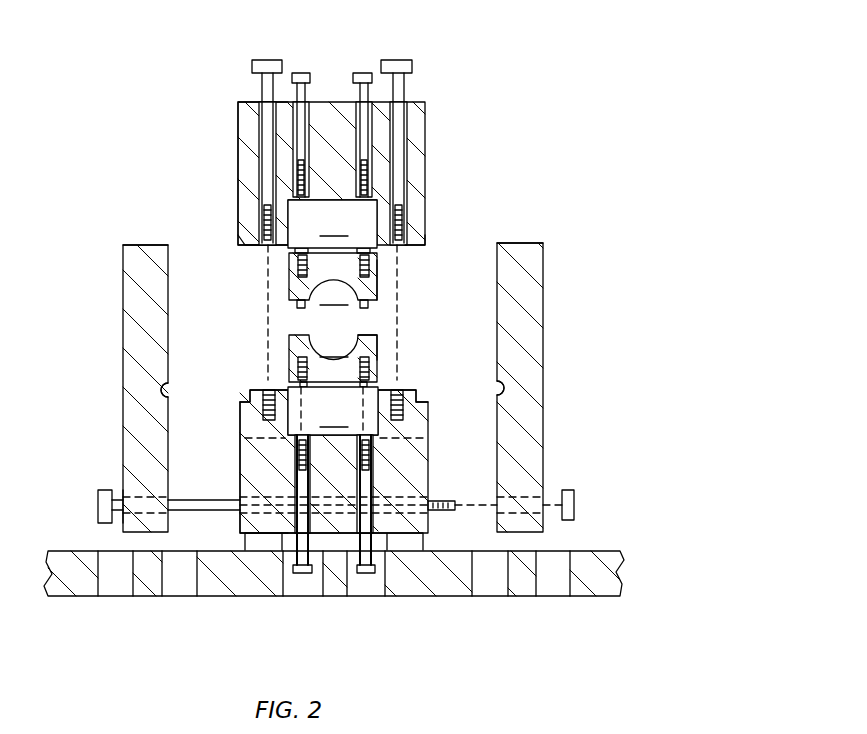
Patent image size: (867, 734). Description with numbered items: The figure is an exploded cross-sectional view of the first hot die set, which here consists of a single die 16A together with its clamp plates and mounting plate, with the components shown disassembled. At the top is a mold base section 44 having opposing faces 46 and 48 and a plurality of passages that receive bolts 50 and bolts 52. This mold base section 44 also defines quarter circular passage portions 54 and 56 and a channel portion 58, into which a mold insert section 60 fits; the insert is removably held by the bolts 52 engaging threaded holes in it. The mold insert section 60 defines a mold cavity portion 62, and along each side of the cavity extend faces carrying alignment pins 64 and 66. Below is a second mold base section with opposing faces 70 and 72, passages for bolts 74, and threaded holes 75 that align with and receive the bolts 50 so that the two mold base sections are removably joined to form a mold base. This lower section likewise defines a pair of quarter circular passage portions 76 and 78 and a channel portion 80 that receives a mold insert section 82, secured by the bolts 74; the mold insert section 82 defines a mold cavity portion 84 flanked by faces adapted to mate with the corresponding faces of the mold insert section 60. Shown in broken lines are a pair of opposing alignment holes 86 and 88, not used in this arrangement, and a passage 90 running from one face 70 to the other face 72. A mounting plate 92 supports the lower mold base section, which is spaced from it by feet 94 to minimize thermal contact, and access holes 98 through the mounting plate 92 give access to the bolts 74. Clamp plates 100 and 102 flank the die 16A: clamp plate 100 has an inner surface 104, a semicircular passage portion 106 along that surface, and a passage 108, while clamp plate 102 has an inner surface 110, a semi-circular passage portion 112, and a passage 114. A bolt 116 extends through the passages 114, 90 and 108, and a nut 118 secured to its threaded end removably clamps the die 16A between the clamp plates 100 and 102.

The die 16A is at (465, 98).
The mold base section 44 is at (418, 145).
The opposing face 46 is at (425, 185).
The opposing face 48 is at (238, 165).
The bolts 50 is at (270, 60).
The bolts 52 is at (302, 73).
The quarter circular passage portion 54 is at (415, 243).
The quarter circular passage portion 56 is at (245, 245).
The channel portion 58 is at (332, 224).
The mold insert section 60 is at (377, 284).
The mold cavity portion 62 is at (333, 279).
The alignment pin 64 is at (370, 306).
The alignment pin 66 is at (297, 302).
The opposing face 70 is at (428, 461).
The opposing face 72 is at (242, 486).
The bolts 74 is at (301, 576).
The threaded holes 75 is at (268, 389).
The quarter circular passage portion 76 is at (416, 396).
The quarter circular passage portion 78 is at (250, 393).
The channel portion 80 is at (333, 411).
The mold insert section 82 is at (377, 340).
The mold cavity portion 84 is at (333, 356).
The alignment hole 86 is at (428, 438).
The alignment hole 88 is at (250, 438).
The passage 90 is at (424, 514).
The mounting plate 92 is at (455, 596).
The feet 94 is at (245, 545).
The access holes 98 is at (312, 596).
The clamp plate 100 is at (543, 298).
The clamp plate 102 is at (123, 290).
The inner surface 104 is at (500, 243).
The semicircular passage portion 106 is at (494, 386).
The passage 108 is at (555, 492).
The inner surface 110 is at (168, 245).
The semi-circular passage portion 112 is at (170, 393).
The passage 114 is at (120, 495).
The bolt 116 is at (98, 500).
The nut 118 is at (575, 500).